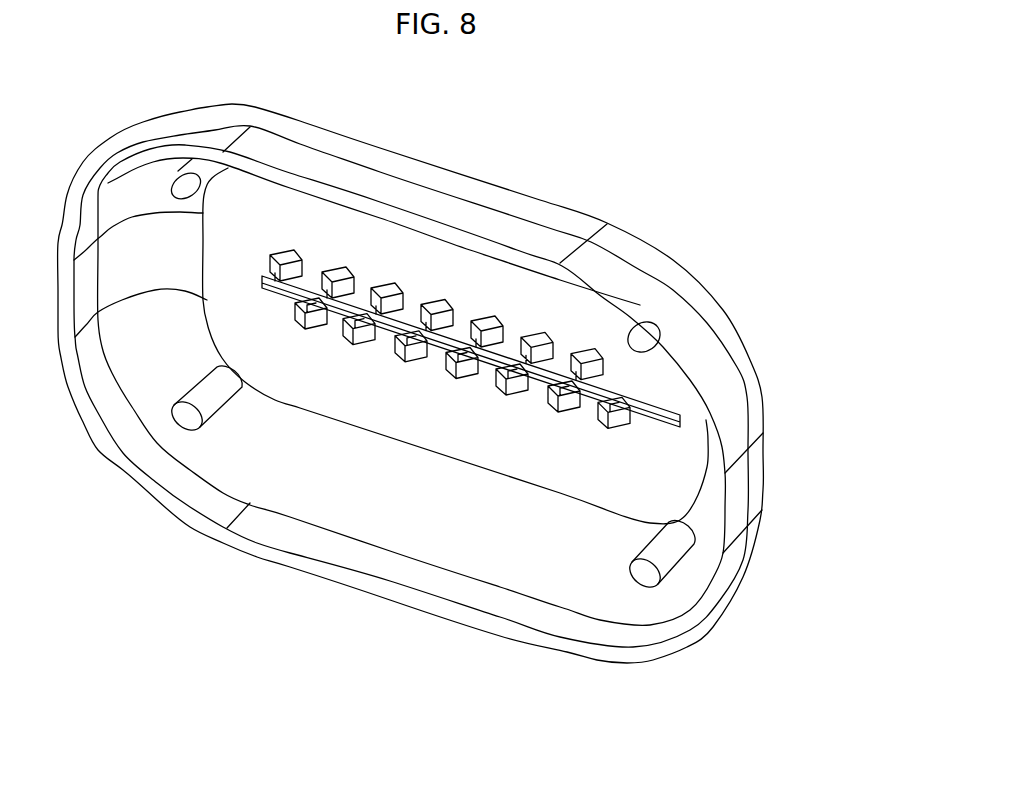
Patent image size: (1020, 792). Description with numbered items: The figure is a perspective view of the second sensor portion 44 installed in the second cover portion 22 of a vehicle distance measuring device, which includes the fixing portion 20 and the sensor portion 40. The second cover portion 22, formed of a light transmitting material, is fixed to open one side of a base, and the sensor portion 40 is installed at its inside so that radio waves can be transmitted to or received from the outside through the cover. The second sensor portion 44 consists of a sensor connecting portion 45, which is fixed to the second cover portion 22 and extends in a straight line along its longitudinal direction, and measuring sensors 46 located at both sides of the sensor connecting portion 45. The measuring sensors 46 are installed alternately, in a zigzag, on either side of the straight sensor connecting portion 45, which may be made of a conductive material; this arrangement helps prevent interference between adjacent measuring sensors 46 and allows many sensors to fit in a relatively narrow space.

The fixing portion 20 is at (411, 383).
The second cover portion 22 is at (428, 178).
The sensor portion 40 is at (520, 371).
The second sensor portion 44 is at (505, 397).
The sensor connecting portion 45 is at (683, 424).
The measuring sensors 46 is at (340, 288).